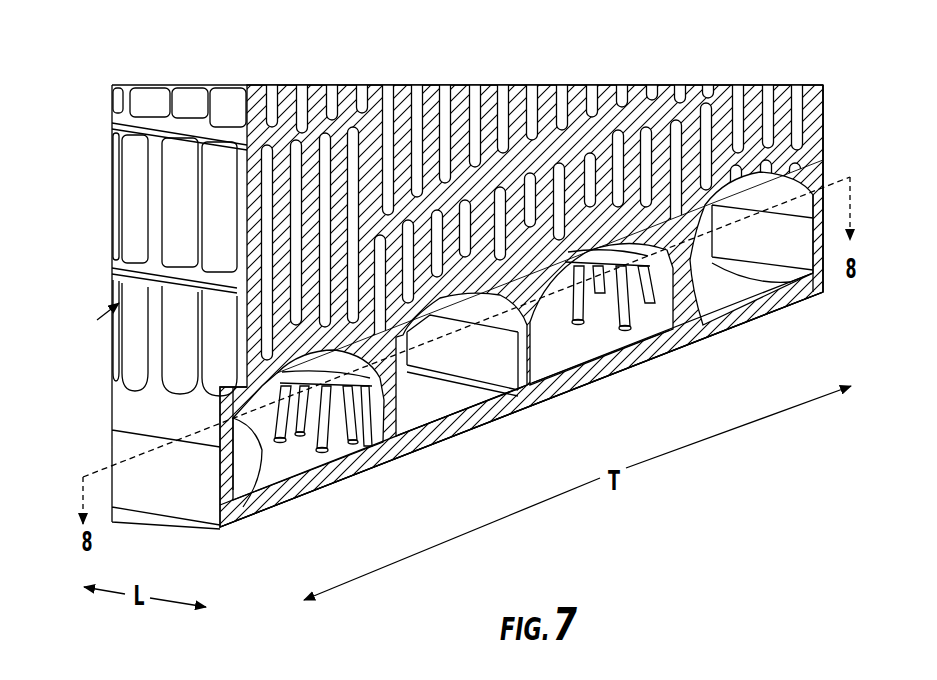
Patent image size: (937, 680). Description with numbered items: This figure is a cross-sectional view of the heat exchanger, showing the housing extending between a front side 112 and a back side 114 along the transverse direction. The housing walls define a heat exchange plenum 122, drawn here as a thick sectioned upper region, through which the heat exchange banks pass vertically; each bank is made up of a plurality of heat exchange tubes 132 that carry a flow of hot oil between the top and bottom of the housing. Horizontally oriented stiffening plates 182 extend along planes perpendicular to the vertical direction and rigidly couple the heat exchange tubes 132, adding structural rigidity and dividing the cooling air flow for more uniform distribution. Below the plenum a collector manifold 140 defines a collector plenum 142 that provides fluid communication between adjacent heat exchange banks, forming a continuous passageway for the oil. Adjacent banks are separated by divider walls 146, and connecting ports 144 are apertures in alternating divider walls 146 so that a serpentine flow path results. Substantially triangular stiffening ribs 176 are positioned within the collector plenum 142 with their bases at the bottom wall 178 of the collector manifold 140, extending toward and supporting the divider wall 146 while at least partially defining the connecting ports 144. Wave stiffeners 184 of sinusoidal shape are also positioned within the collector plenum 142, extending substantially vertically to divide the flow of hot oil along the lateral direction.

The front side 112 is at (134, 427).
The back side 114 is at (826, 137).
The heat exchange plenum 122 is at (455, 82).
The heat exchange tubes 132 is at (228, 100).
The collector manifold 140 is at (478, 427).
The collector plenum 142 is at (411, 388).
The connecting port 144 is at (647, 300).
The divider wall 146 is at (524, 350).
The stiffening ribs 176 is at (340, 455).
The bottom wall 178 is at (582, 348).
The stiffening plates 182 is at (152, 266).
The wave stiffeners 184 is at (277, 415).